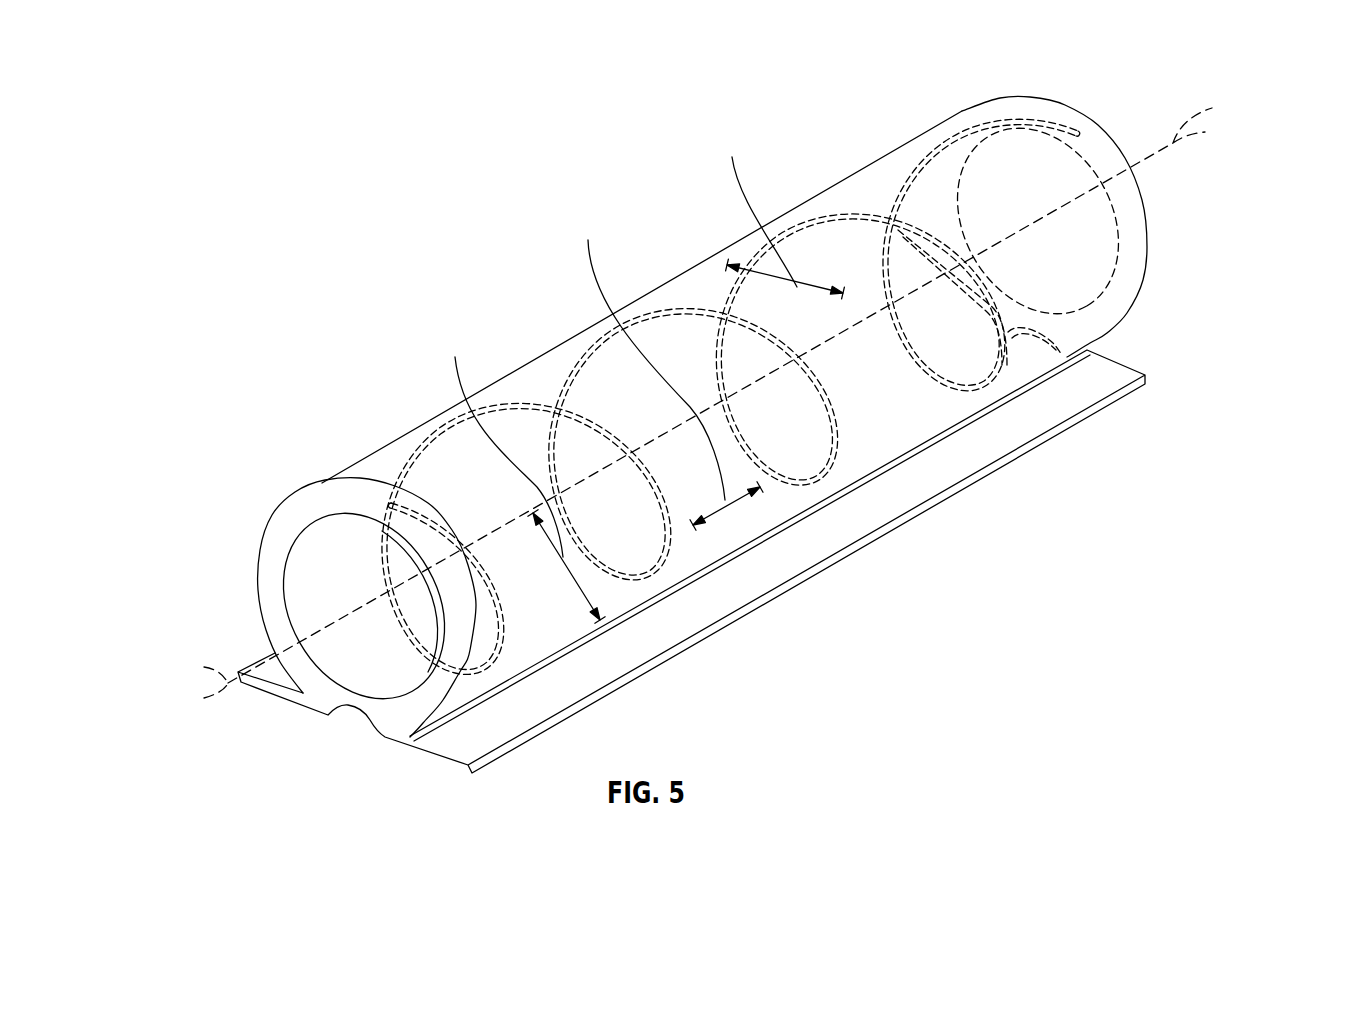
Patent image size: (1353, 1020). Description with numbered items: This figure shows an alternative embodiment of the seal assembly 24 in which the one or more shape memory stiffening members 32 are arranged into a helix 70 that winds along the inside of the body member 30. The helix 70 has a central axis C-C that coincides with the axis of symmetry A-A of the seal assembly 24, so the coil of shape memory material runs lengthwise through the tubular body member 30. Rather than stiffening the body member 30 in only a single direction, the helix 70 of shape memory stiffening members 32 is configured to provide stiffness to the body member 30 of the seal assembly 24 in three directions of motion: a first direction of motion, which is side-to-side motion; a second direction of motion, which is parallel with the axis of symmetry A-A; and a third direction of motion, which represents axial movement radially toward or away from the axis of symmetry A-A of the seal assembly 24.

The seal assembly 24 is at (702, 419).
The body member 30 is at (902, 395).
The shape memory stiffening members 32 is at (993, 302).
The helix 70 is at (1013, 361).